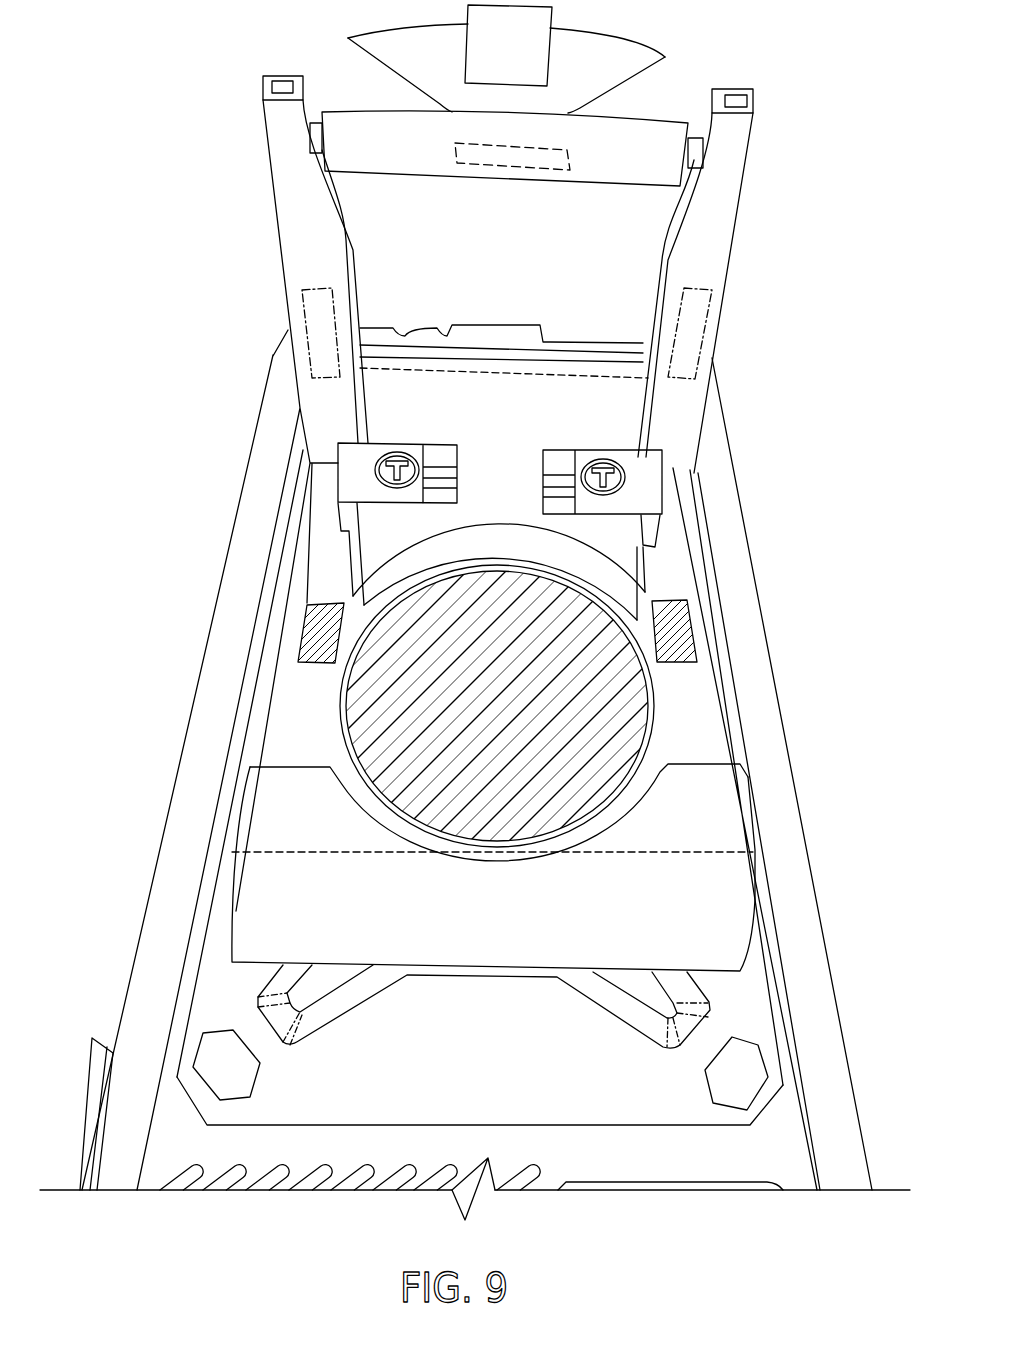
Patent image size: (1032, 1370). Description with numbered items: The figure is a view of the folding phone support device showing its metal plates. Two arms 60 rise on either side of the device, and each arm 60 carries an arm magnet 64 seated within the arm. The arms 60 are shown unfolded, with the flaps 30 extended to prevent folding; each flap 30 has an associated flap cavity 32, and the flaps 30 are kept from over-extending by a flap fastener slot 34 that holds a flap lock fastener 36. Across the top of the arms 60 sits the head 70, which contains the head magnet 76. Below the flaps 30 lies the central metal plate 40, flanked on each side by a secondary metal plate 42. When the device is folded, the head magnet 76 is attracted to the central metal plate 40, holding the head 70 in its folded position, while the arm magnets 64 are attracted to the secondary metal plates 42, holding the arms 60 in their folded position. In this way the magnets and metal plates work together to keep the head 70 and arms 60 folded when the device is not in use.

The flap 30 is at (646, 490).
The flap cavity 32 is at (437, 458).
The flap fastener slot 34 is at (415, 478).
The flap lock fastener 36 is at (378, 460).
The central metal plate 40 is at (573, 732).
The secondary metal plate 42 is at (305, 620).
The arm 60 is at (297, 233).
The arm magnet 64 is at (313, 320).
The head 70 is at (643, 147).
The head magnet 76 is at (503, 152).